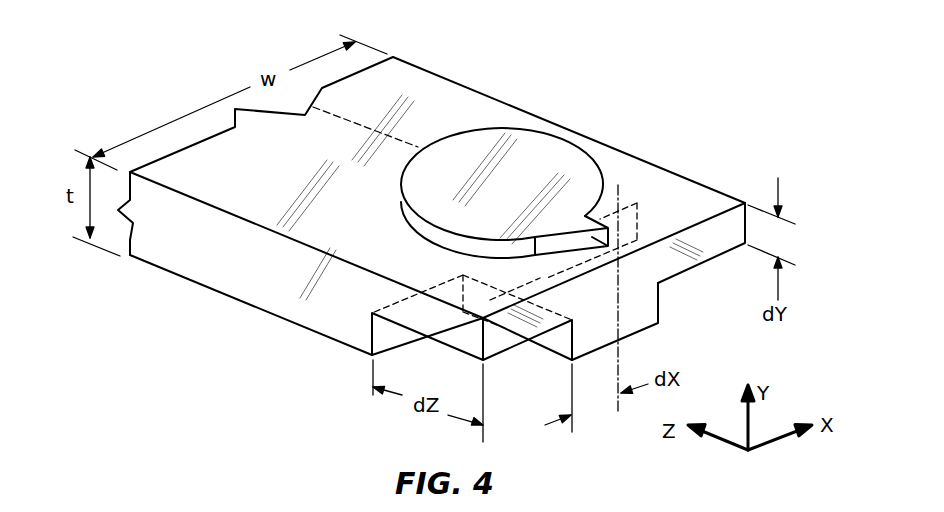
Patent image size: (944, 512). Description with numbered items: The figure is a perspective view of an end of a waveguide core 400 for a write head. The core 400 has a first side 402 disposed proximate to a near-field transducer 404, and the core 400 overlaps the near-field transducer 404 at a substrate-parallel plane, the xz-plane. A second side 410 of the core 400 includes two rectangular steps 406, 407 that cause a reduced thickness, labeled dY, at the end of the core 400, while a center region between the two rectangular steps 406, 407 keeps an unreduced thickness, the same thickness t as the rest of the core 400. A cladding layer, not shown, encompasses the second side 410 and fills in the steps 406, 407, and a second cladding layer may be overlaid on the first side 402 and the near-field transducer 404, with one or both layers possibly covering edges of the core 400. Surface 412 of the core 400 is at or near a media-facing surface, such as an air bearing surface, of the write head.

The waveguide core 400 is at (466, 263).
The first side 402 is at (455, 92).
The near-field transducer 404 is at (553, 145).
The rectangular step 406 is at (513, 418).
The rectangular step 407 is at (709, 310).
The second side 410 is at (326, 340).
The surface 412 is at (632, 318).